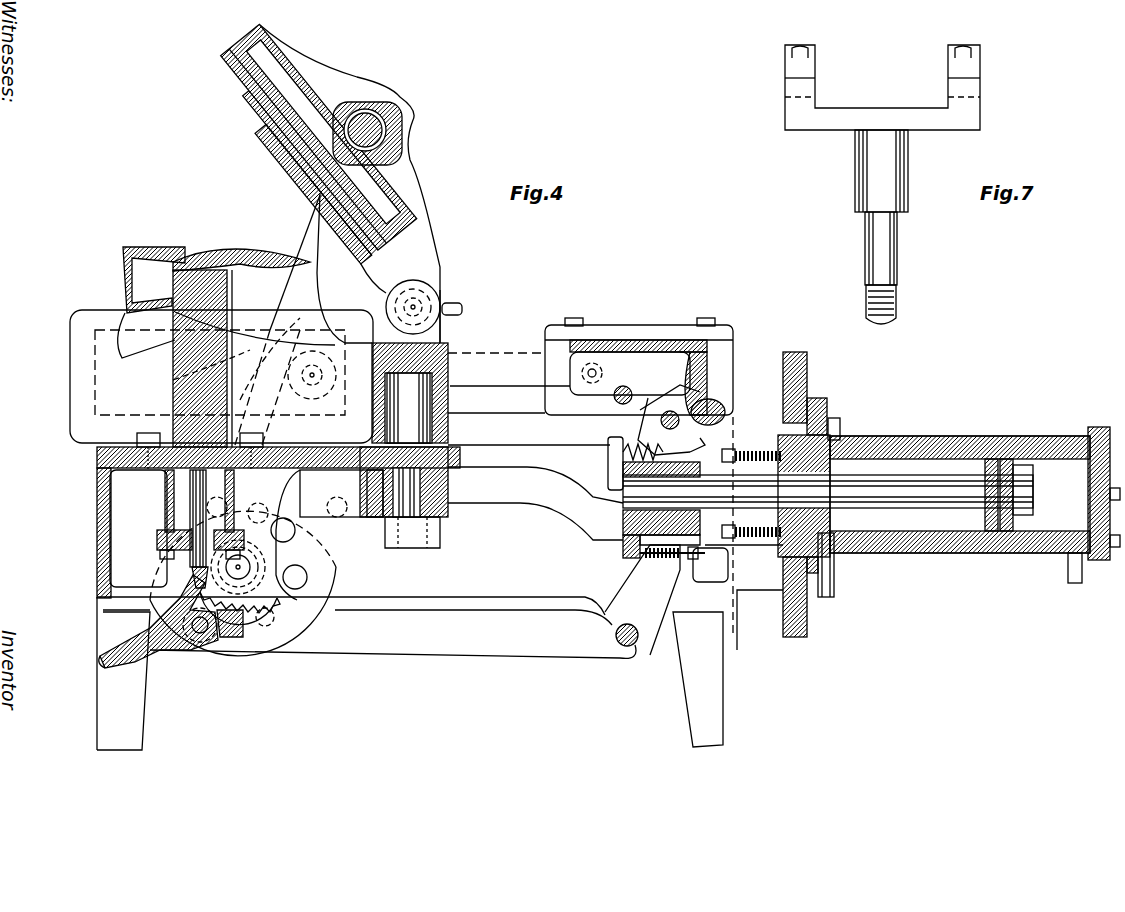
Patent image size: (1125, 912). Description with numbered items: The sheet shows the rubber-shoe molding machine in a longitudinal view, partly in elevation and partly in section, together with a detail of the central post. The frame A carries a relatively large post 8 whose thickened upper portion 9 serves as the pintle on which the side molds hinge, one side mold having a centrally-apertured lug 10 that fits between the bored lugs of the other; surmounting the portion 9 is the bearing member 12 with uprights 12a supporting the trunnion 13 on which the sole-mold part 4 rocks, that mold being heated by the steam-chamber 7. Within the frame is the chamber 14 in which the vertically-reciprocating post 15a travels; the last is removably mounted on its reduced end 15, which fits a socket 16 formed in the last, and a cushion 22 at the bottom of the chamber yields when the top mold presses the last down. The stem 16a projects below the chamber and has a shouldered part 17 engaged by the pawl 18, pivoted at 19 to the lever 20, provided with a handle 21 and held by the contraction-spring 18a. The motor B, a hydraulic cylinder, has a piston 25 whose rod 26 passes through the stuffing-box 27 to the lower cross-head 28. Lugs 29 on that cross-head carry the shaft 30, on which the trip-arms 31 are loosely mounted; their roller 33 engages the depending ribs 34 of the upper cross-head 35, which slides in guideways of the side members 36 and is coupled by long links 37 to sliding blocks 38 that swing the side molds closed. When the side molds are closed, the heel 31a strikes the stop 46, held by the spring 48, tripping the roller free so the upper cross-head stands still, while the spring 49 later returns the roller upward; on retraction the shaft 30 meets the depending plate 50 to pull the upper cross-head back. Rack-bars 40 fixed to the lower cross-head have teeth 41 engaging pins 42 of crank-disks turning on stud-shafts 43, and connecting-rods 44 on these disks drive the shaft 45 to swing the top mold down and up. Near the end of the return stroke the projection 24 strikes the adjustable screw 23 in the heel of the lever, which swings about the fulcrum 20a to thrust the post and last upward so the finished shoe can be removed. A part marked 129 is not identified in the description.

In FIG. 4, the sole-mold part 4 is at (562, 456).
In FIG. 4, the steam-chamber 7 is at (275, 88).
In FIG. 4, the post 8 is at (448, 502).
In FIG. 7, the post 8 is at (897, 246).
In FIG. 4, the thickened upper portion 9 is at (445, 375).
In FIG. 7, the thickened upper portion 9 is at (906, 167).
In FIG. 4, the centrally-apertured lug 10 is at (509, 383).
In FIG. 4, the bearing member 12 is at (448, 343).
In FIG. 7, the bearing member 12 is at (975, 108).
In FIG. 7, the uprights 12a is at (813, 90).
In FIG. 4, the trunnion 13 is at (400, 305).
In FIG. 4, the chamber 14 is at (175, 485).
In FIG. 4, the reduced end 15 is at (562, 456).
In FIG. 4, the vertically-reciprocating post 15a is at (173, 388).
In FIG. 4, the socket 16 is at (188, 265).
In FIG. 4, the stem 16a is at (195, 505).
In FIG. 4, the shouldered part 17 is at (192, 572).
In FIG. 4, the pawl 18 is at (163, 608).
In FIG. 4, the contraction-spring 18a is at (245, 595).
In FIG. 4, the pivot 19 is at (200, 634).
In FIG. 4, the lever 20 is at (391, 601).
In FIG. 4, the fulcrum point 20a is at (628, 647).
In FIG. 4, the handle 21 is at (118, 668).
In FIG. 4, the cushion 22 is at (105, 540).
In FIG. 4, the adjustable screw 23 is at (685, 560).
In FIG. 4, the projection 24 is at (640, 550).
In FIG. 4, the piston 25 is at (1010, 459).
In FIG. 4, the rod 26 is at (870, 500).
In FIG. 4, the stuffing-box 27 is at (748, 540).
In FIG. 4, the lower cross-head 28 is at (623, 518).
In FIG. 4, the lugs 29 is at (705, 385).
In FIG. 4, the shaft 30 is at (670, 410).
In FIG. 4, the trip-arms 31 is at (645, 395).
In FIG. 4, the heel 31a is at (705, 446).
In FIG. 4, the roller 33 is at (623, 386).
In FIG. 4, the depending ribs 34 is at (605, 383).
In FIG. 4, the upper cross-head 35 is at (662, 370).
In FIG. 4, the side members 36 is at (722, 345).
In FIG. 4, the long link members 37 is at (450, 390).
In FIG. 4, the sliding blocks 38 is at (100, 375).
In FIG. 4, the rack-bars 40 is at (535, 503).
In FIG. 4, the teeth 41 is at (318, 512).
In FIG. 4, the pins or lugs 42 is at (307, 578).
In FIG. 4, the stud-shaft 43 is at (275, 582).
In FIG. 4, the connecting-rods 44 is at (320, 200).
In FIG. 4, the shaft 45 is at (402, 133).
In FIG. 4, the stop 46 is at (622, 470).
In FIG. 4, the spring 48 is at (608, 448).
In FIG. 4, the spring 49 is at (630, 442).
In FIG. 4, the depending plate 50 is at (725, 402).
In FIG. 4, the pin 129 is at (440, 292).
In FIG. 4, the frame A is at (562, 456).
In FIG. 4, the motor B is at (905, 437).